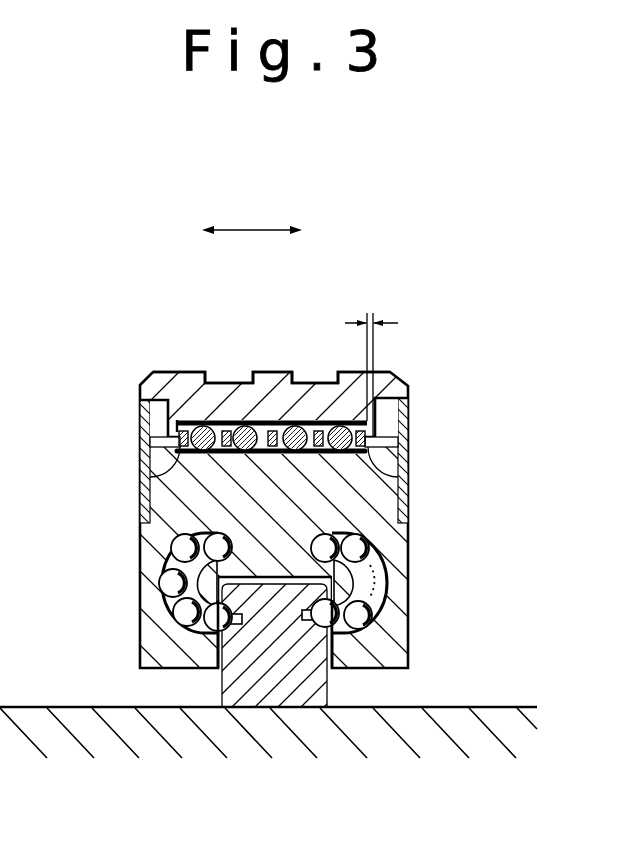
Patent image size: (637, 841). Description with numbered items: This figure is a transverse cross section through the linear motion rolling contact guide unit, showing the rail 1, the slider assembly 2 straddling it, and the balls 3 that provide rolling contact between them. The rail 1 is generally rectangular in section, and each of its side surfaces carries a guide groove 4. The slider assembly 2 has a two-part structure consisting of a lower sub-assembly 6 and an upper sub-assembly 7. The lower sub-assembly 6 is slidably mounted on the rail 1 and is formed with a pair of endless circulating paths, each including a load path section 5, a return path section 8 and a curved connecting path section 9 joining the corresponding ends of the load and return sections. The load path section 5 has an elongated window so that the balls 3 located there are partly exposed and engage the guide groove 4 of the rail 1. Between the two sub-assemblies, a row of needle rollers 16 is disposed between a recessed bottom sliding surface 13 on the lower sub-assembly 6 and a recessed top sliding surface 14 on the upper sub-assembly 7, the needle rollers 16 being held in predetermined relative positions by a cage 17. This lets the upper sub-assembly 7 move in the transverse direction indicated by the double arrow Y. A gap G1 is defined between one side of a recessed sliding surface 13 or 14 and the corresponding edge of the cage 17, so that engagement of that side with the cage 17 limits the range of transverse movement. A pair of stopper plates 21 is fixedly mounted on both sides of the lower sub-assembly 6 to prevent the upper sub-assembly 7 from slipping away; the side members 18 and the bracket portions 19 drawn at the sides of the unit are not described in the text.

The rail 1 is at (270, 676).
The slider assembly 2 is at (132, 378).
The balls 3 is at (373, 615).
The guide groove 4 is at (337, 668).
The load path section 5 is at (222, 662).
The lower sub-assembly 6 is at (160, 548).
The upper sub-assembly 7 is at (270, 371).
The return path section 8 is at (372, 547).
The curved connecting path section 9 is at (386, 578).
The bottom sliding surface 13 is at (306, 419).
The top sliding surface 14 is at (217, 456).
The needle rollers 16 is at (200, 426).
The cage 17 is at (232, 430).
The side seal strip 18 is at (147, 474).
The retaining bracket 19 is at (150, 420).
The stopper plates 21 is at (150, 444).
The gap G1 is at (371, 359).
The double arrow Y is at (256, 228).